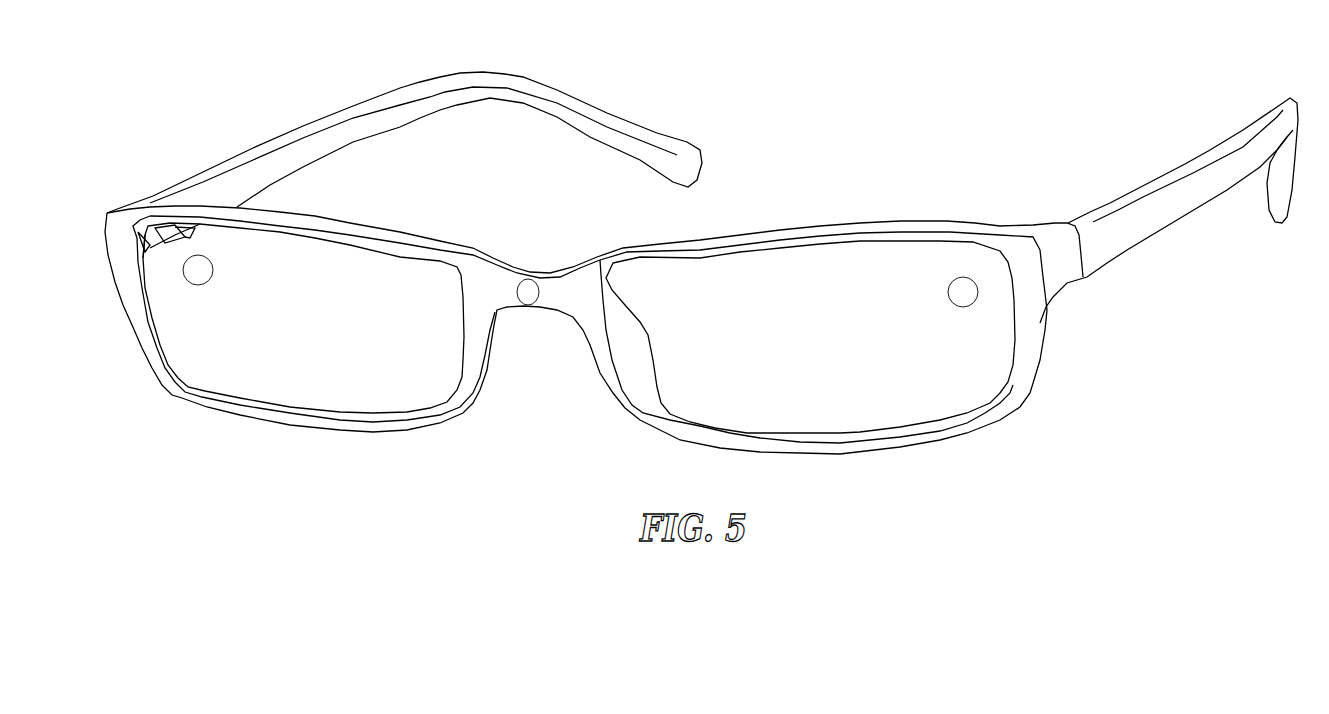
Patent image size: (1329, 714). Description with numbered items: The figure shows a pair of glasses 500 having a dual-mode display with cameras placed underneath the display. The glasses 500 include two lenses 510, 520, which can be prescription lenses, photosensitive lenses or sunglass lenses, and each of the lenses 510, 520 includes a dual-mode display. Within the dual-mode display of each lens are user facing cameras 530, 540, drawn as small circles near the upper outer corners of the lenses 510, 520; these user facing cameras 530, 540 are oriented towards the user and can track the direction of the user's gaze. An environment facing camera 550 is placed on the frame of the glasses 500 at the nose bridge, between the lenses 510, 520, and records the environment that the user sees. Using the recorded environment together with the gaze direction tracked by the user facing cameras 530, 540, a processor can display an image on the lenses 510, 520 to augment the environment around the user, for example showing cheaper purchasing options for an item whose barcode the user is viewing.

The glasses 500 is at (340, 110).
The lens 510 is at (297, 318).
The lens 520 is at (807, 337).
The user facing camera 530 is at (183, 268).
The user facing camera 540 is at (980, 288).
The environment facing camera 550 is at (528, 279).